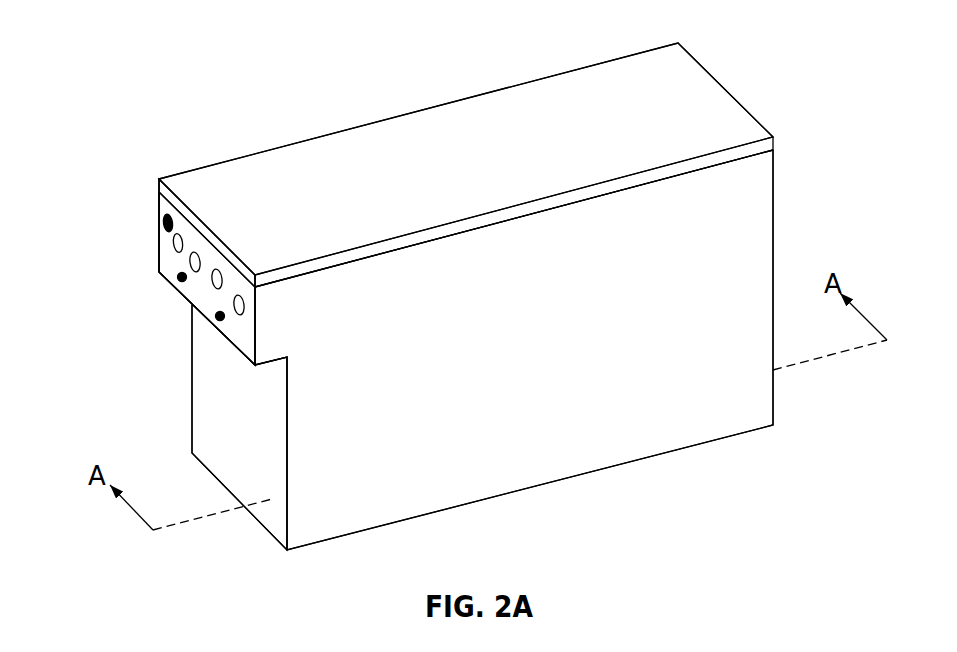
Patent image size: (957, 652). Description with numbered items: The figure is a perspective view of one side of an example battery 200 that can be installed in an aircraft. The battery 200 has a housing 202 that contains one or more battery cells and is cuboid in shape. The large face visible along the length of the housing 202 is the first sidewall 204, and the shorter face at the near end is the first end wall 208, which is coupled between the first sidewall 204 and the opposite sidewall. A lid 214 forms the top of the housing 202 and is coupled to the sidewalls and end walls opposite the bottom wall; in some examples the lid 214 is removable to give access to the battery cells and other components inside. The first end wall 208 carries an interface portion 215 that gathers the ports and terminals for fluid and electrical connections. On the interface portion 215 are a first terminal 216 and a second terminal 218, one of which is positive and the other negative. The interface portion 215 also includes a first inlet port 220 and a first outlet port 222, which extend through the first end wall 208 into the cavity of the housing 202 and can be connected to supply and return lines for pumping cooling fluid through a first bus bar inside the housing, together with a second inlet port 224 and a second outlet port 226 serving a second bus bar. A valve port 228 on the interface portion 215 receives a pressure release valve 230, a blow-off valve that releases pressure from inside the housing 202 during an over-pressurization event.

The battery 200 is at (220, 63).
The housing 202 is at (210, 182).
The first sidewall 204 is at (715, 192).
The first end wall 208 is at (220, 417).
The lid 214 is at (352, 158).
The interface portion 215 is at (117, 195).
The first terminal 216 is at (216, 320).
The second terminal 218 is at (178, 279).
The first inlet port 220 is at (210, 290).
The first outlet port 222 is at (243, 313).
The second inlet port 224 is at (193, 275).
The second outlet port 226 is at (171, 250).
The valve port 228 is at (158, 232).
The pressure release valve 230 is at (158, 226).